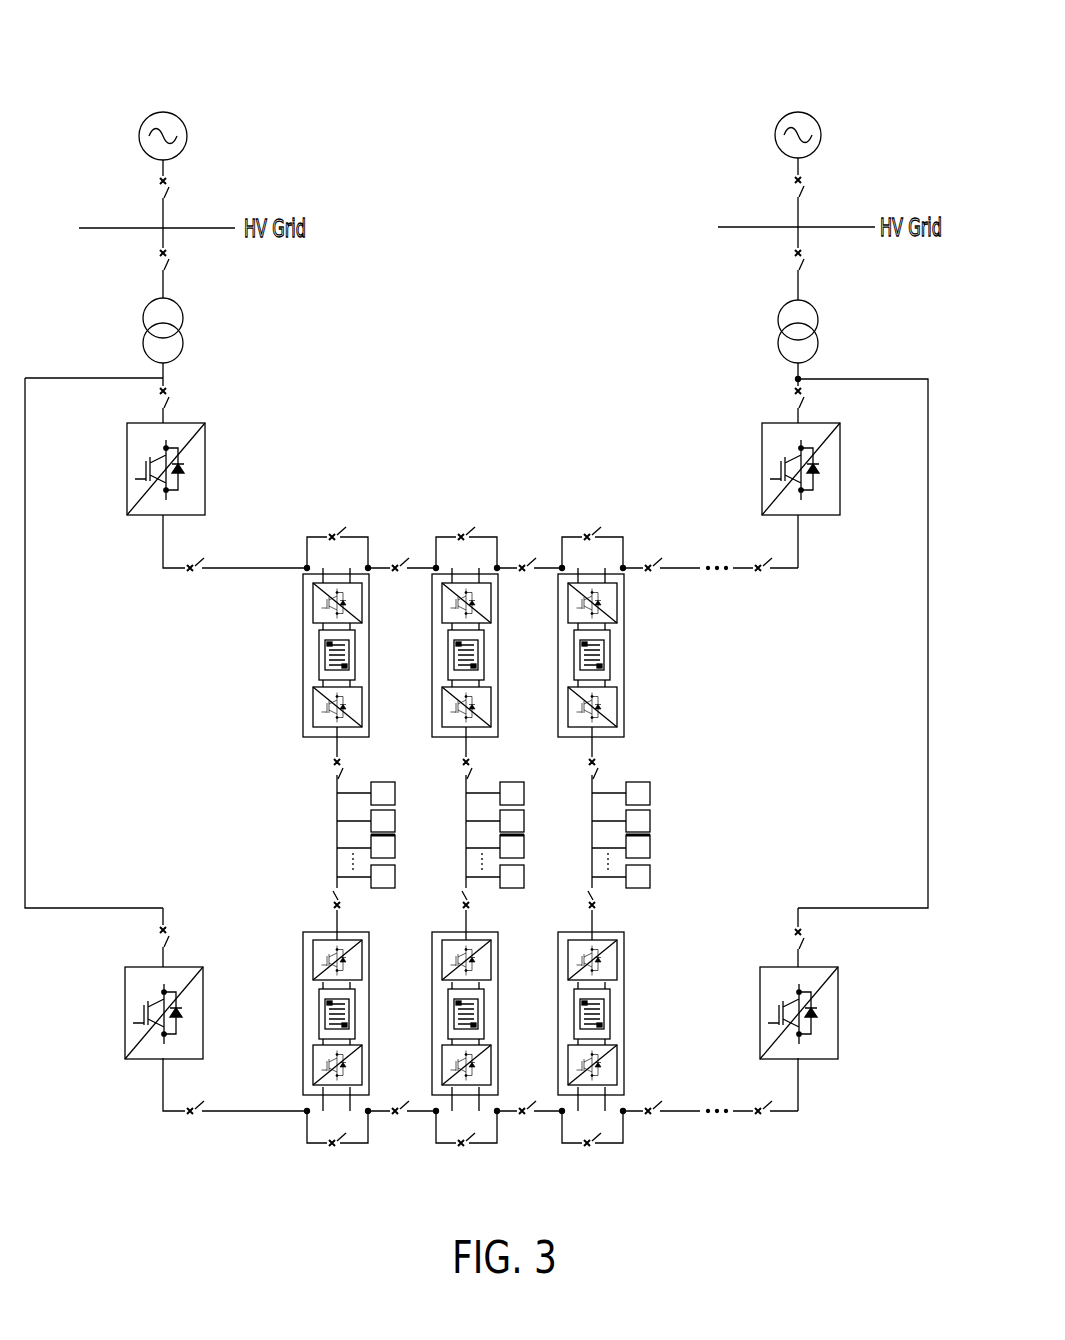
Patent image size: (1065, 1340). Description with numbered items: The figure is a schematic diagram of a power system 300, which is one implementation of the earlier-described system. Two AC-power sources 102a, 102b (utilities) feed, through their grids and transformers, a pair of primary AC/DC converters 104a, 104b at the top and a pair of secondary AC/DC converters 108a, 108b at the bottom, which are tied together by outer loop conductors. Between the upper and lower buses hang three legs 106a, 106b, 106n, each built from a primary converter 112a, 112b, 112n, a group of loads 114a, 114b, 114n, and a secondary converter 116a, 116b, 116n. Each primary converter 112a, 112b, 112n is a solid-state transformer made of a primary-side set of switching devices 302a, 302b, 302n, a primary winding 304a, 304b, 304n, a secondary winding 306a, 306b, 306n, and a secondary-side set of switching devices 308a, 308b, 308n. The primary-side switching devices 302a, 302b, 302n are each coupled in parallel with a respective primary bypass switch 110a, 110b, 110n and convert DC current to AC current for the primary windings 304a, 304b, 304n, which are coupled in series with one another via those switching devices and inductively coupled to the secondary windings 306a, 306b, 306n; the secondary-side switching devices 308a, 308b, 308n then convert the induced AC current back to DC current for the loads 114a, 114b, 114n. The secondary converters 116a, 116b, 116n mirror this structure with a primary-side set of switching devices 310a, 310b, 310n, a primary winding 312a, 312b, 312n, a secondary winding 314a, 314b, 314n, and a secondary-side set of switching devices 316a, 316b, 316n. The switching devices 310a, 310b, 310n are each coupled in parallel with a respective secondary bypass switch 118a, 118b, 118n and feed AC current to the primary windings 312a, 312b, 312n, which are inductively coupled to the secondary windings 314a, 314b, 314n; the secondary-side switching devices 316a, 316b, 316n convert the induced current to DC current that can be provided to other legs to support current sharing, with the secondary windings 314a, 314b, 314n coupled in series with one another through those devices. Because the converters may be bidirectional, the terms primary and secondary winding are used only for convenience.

The power system 300 is at (111, 84).
The AC-power source 102a is at (184, 120).
The AC-power source 102b is at (819, 120).
The primary AC/DC converter 104a is at (199, 423).
The primary AC/DC converter 104b is at (843, 463).
The leg 106a is at (321, 507).
The leg 106b is at (453, 489).
The leg 106n is at (575, 489).
The secondary AC/DC converter 108a is at (184, 967).
The secondary AC/DC converter 108b is at (760, 988).
The primary bypass switch 110a is at (340, 530).
The primary bypass switch 110b is at (468, 530).
The primary bypass switch 110n is at (595, 530).
The primary converter 112a is at (299, 665).
The primary converter 112b is at (424, 668).
The primary converter 112n is at (599, 662).
The load 114a is at (404, 826).
The load 114b is at (531, 826).
The load 114n is at (658, 826).
The secondary converter 116a is at (299, 1023).
The secondary converter 116b is at (436, 1007).
The secondary converter 116n is at (599, 1023).
The secondary bypass switch 118a is at (346, 1150).
The secondary bypass switch 118b is at (474, 1150).
The secondary bypass switch 118n is at (600, 1150).
The primary-side set of switching devices 302a is at (313, 612).
The primary-side set of switching devices 302b is at (442, 612).
The primary-side set of switching devices 302n is at (568, 612).
The primary winding 304a is at (328, 648).
The primary winding 304b is at (457, 648).
The primary winding 304n is at (583, 648).
The secondary winding 306a is at (326, 665).
The secondary winding 306b is at (455, 665).
The secondary winding 306n is at (581, 665).
The secondary-side set of switching devices 308a is at (313, 697).
The secondary-side set of switching devices 308b is at (442, 697).
The secondary-side set of switching devices 308n is at (568, 697).
The primary-side set of switching devices 310a is at (313, 961).
The primary-side set of switching devices 310b is at (442, 961).
The primary-side set of switching devices 310n is at (568, 961).
The primary winding 312a is at (328, 1000).
The primary winding 312b is at (457, 1000).
The primary winding 312n is at (583, 1000).
The secondary winding 314a is at (326, 1015).
The secondary winding 314b is at (455, 1015).
The secondary winding 314n is at (581, 1015).
The secondary-side set of switching devices 316a is at (313, 1049).
The secondary-side set of switching devices 316b is at (442, 1049).
The secondary-side set of switching devices 316n is at (568, 1049).